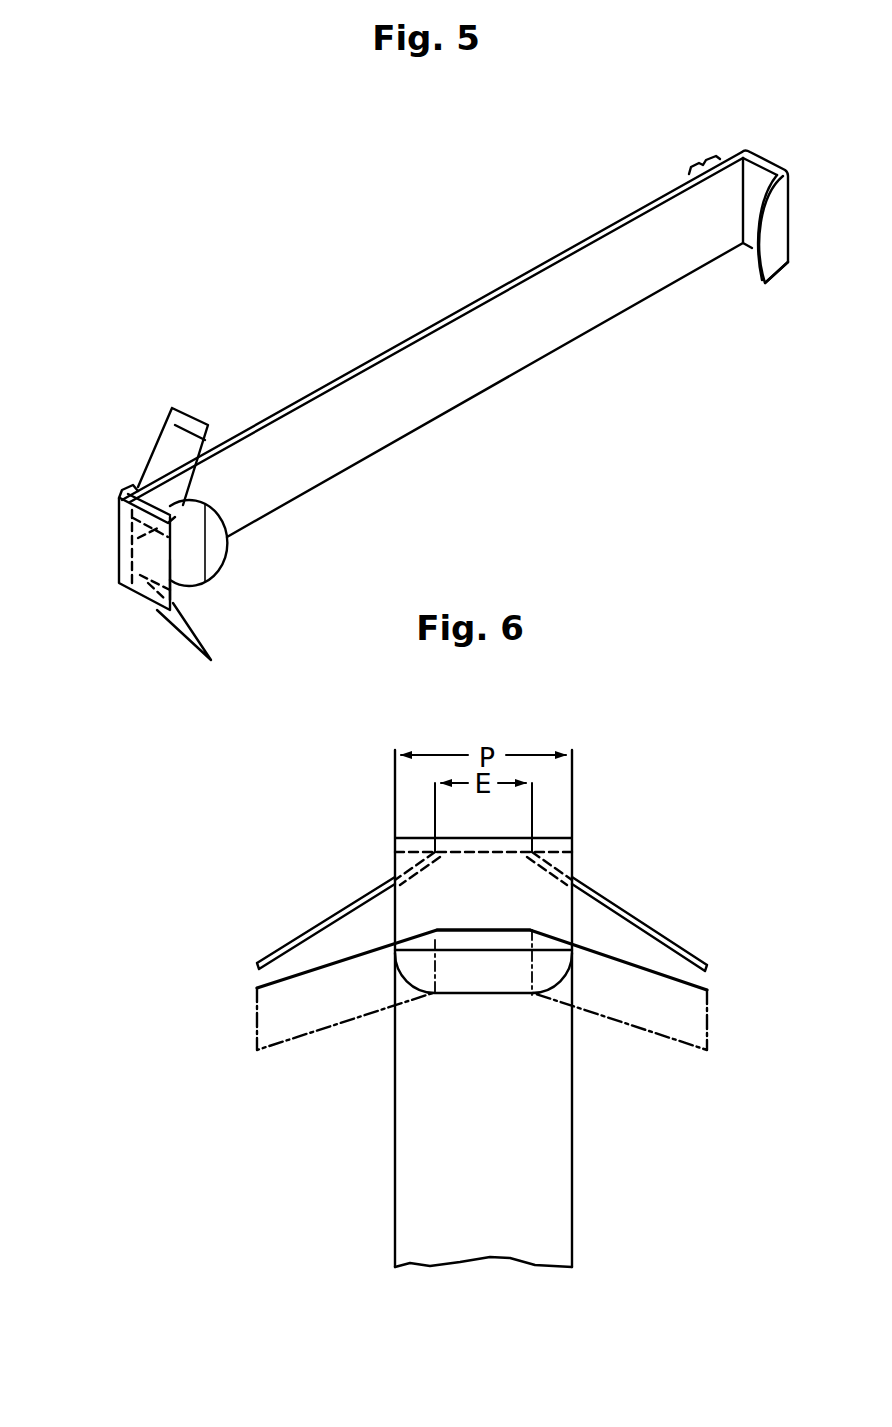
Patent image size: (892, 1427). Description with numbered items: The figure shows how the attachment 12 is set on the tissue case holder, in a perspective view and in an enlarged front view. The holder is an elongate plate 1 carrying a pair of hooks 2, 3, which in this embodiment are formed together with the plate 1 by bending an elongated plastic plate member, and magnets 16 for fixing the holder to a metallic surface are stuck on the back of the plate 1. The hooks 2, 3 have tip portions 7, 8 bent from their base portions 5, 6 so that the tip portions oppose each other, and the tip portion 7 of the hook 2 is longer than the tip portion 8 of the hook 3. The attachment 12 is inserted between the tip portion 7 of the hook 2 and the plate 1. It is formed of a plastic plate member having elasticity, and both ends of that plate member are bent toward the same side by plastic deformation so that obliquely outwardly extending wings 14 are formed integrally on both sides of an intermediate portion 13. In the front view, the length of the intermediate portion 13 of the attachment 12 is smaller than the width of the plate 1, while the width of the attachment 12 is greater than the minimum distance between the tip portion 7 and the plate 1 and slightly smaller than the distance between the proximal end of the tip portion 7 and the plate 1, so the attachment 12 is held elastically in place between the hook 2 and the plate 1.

In FIG. 5, the plate 1 is at (492, 312).
In FIG. 6, the plate 1 is at (447, 1168).
In FIG. 5, the hook 2 is at (192, 570).
In FIG. 6, the hook 2 is at (432, 898).
In FIG. 5, the hook 3 is at (772, 252).
In FIG. 5, the base portion 5 is at (138, 541).
In FIG. 6, the base portion 5 is at (452, 842).
In FIG. 5, the base portion 6 is at (758, 173).
In FIG. 5, the tip portion 7 is at (193, 543).
In FIG. 6, the tip portion 7 is at (480, 918).
In FIG. 5, the tip portion 8 is at (775, 217).
In FIG. 5, the attachment 12 is at (150, 452).
In FIG. 6, the attachment 12 is at (607, 890).
In FIG. 5, the intermediate portion 13 is at (130, 596).
In FIG. 6, the intermediate portion 13 is at (503, 857).
In FIG. 5, the wings 14 is at (177, 430).
In FIG. 6, the wings 14 is at (317, 927).
In FIG. 5, the magnets 16 is at (130, 490).